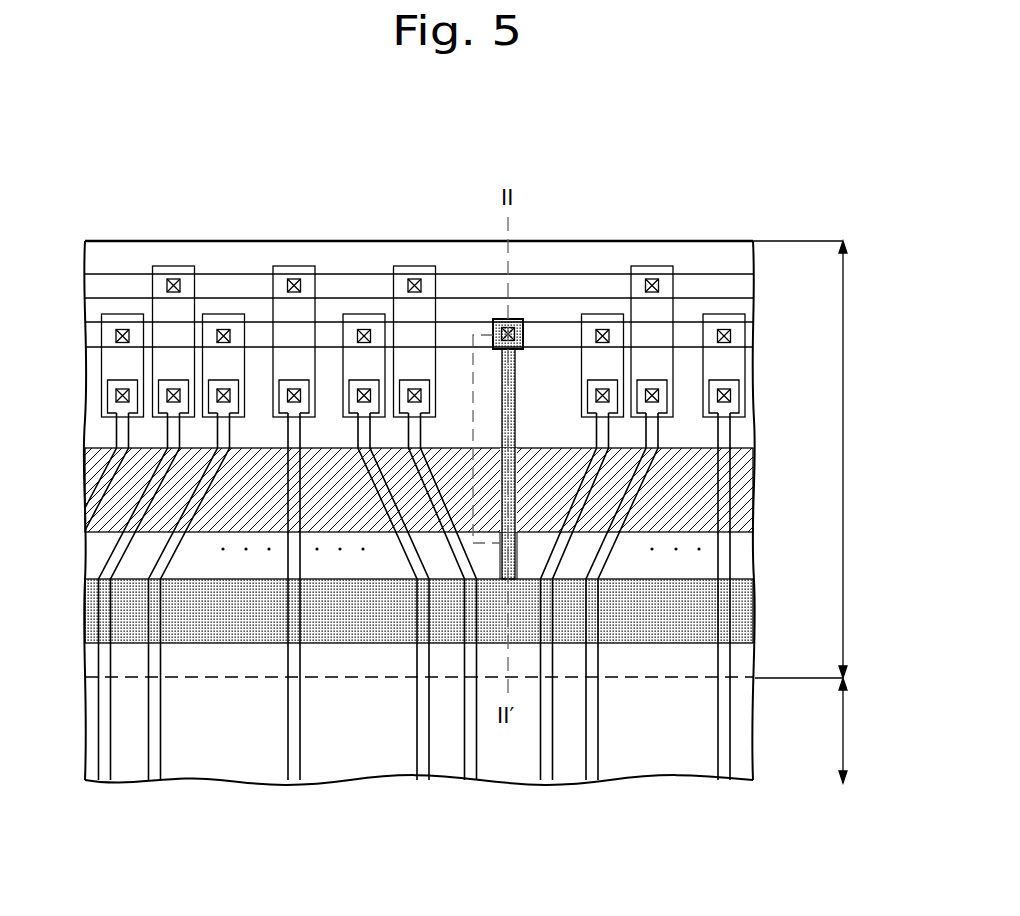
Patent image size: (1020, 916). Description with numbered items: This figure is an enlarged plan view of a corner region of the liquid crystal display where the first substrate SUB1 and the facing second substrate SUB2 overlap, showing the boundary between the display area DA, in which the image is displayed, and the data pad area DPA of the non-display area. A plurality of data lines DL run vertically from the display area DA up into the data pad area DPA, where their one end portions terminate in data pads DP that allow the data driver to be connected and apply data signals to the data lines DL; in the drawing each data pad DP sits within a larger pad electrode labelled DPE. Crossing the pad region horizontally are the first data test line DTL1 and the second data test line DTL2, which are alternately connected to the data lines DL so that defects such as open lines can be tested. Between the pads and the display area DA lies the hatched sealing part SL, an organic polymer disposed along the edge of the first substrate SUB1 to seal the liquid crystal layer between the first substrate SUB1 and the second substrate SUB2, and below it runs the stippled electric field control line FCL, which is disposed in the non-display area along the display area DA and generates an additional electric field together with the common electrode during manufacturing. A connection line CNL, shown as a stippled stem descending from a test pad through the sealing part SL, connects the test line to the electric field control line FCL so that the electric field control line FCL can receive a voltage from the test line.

The first substrate SUB1 is at (699, 248).
The second substrate SUB2 is at (742, 432).
The first data test line DTL1 is at (749, 336).
The second data test line DTL2 is at (742, 286).
The dummy pad electrode DPE is at (272, 304).
The data pad DP is at (309, 393).
The data line DL is at (294, 720).
The sealing part SL is at (82, 448).
The electric field control line FCL is at (82, 579).
The connection line CNL is at (514, 488).
The data pad area DPA is at (818, 459).
The display area DA is at (856, 730).